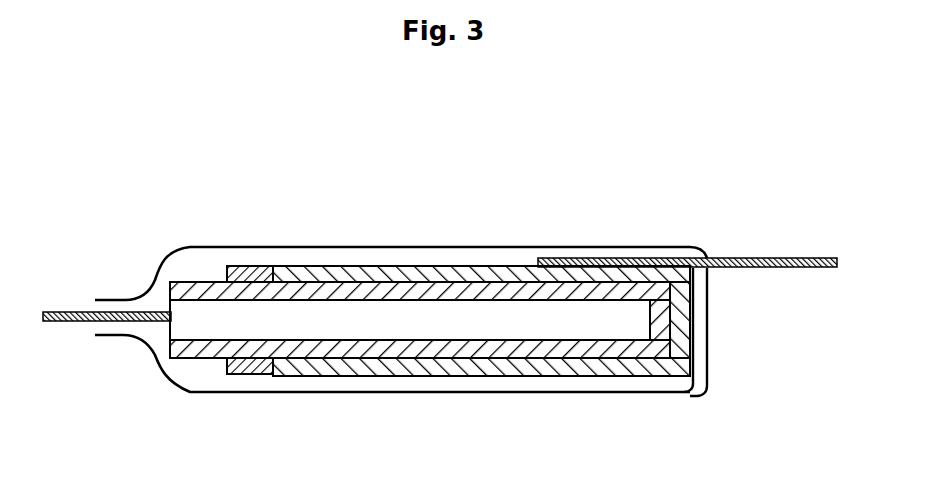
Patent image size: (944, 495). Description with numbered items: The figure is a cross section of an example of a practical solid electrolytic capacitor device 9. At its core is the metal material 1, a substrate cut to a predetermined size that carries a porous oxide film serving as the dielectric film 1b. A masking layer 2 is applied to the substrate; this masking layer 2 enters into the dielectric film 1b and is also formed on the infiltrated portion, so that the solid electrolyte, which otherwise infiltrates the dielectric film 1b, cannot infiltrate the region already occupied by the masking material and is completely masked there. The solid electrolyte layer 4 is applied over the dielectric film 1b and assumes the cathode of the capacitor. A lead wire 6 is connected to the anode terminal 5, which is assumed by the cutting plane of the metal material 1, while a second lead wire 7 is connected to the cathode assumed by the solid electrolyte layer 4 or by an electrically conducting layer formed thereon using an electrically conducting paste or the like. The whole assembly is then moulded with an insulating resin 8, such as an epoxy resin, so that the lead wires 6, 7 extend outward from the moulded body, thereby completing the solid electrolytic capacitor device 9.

The metal material 1 is at (213, 323).
The dielectric film 1b is at (350, 274).
The masking layer 2 is at (257, 266).
The solid electrolyte layer 4 is at (437, 266).
The anode terminal 5 is at (166, 327).
The lead wire 6 is at (78, 312).
The lead wire 7 is at (750, 258).
The insulating resin 8 is at (597, 385).
The solid electrolytic capacitor device 9 is at (649, 236).